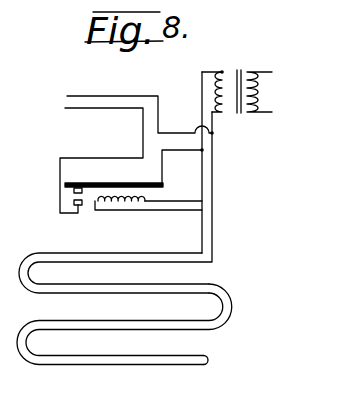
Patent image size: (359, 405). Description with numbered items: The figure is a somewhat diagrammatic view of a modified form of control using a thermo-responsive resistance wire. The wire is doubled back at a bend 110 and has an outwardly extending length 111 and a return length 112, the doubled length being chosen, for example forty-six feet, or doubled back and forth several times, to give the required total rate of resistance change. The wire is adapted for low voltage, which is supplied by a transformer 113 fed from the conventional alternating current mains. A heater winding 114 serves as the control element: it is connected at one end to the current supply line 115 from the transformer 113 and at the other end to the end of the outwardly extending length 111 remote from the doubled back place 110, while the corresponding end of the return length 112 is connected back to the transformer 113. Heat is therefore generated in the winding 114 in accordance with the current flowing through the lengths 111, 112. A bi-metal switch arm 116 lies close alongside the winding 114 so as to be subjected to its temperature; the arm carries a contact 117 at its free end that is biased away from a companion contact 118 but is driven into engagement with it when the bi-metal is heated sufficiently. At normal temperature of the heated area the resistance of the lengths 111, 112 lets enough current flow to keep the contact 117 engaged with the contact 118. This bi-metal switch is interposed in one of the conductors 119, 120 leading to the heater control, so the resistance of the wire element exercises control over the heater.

The doubled back place 110 is at (209, 358).
The outwardly extending length 111 is at (127, 253).
The return length 112 is at (137, 259).
The transformer 113 is at (236, 57).
The heater winding 114 is at (99, 196).
The current supply line 115 is at (197, 91).
The bi-metal switch arm 116 is at (122, 176).
The contact 117 is at (73, 191).
The companion contact 118 is at (73, 203).
The conductor 119 is at (93, 110).
The conductor 120 is at (87, 95).